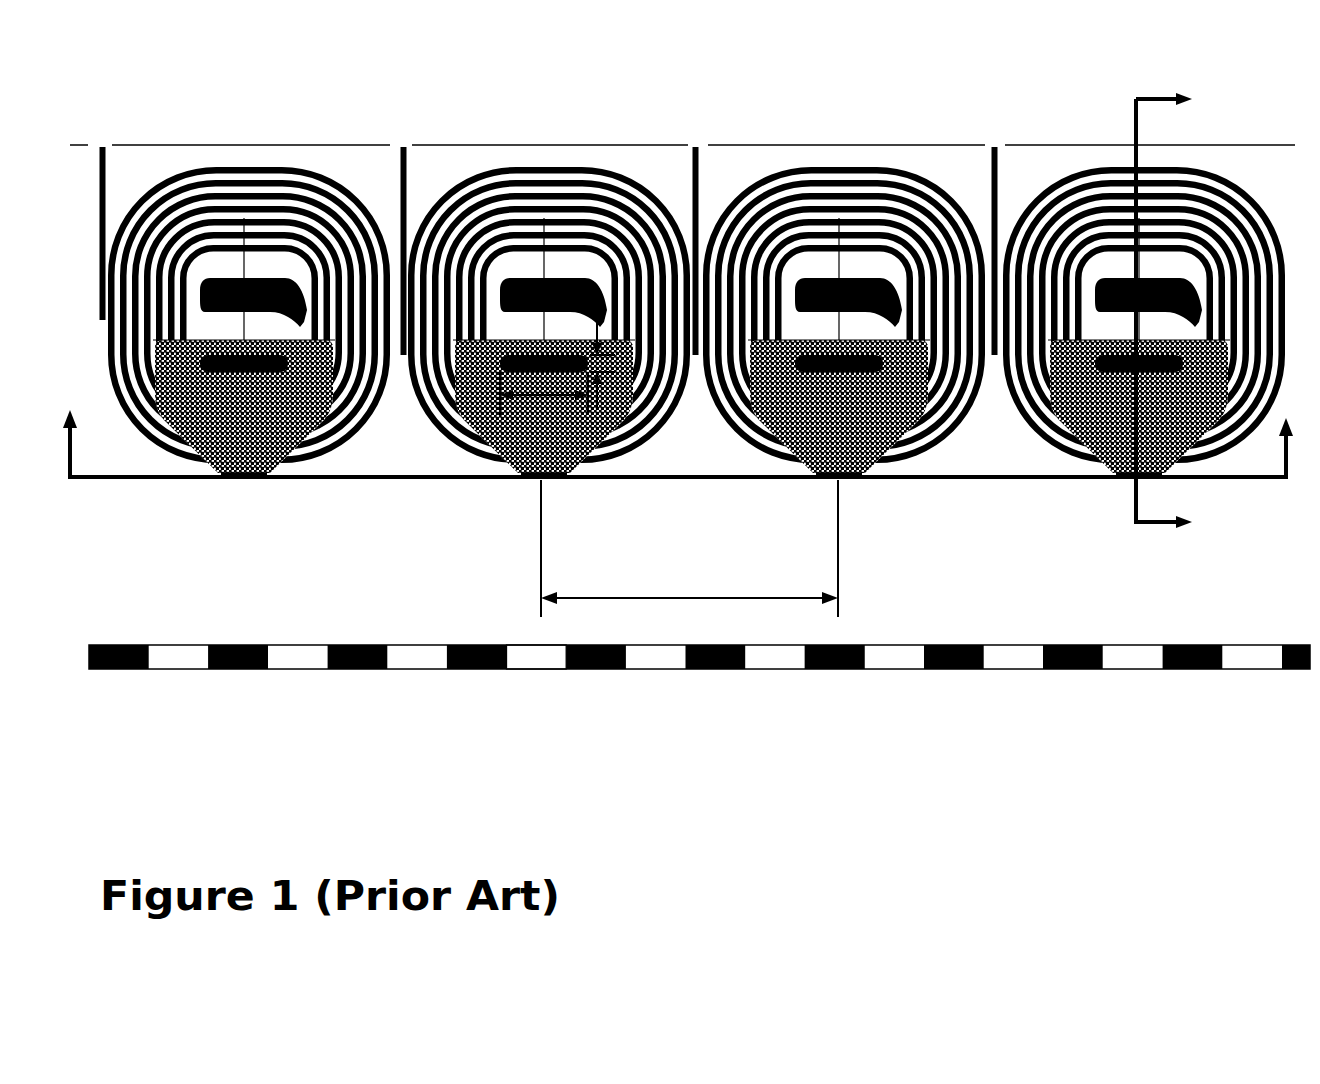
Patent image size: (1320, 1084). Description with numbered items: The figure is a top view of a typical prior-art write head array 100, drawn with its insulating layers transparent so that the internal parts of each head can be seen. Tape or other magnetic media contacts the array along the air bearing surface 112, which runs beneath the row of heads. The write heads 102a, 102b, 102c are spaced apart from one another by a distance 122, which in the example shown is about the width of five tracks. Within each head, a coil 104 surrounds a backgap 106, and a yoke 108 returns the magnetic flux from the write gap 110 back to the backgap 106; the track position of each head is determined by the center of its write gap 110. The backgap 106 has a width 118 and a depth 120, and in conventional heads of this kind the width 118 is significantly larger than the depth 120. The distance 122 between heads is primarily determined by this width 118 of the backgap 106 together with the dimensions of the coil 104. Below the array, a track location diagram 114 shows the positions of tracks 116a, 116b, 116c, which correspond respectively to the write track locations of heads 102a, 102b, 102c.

The write head array 100 is at (682, 345).
The write head 102a is at (267, 345).
The write head 102b is at (569, 317).
The write head 102c is at (772, 161).
The coil 104 is at (250, 168).
The backgap 106 is at (290, 372).
The yoke 108 is at (260, 435).
The write gap 110 is at (242, 482).
The air bearing surface (ABS) 112 is at (138, 477).
The track location diagram 114 is at (699, 702).
The track 116a is at (243, 657).
The track 116b is at (537, 657).
The track 116c is at (815, 658).
The width of backgap 118 is at (542, 400).
The depth of backgap 120 is at (610, 362).
The distance between write heads 122 is at (689, 556).